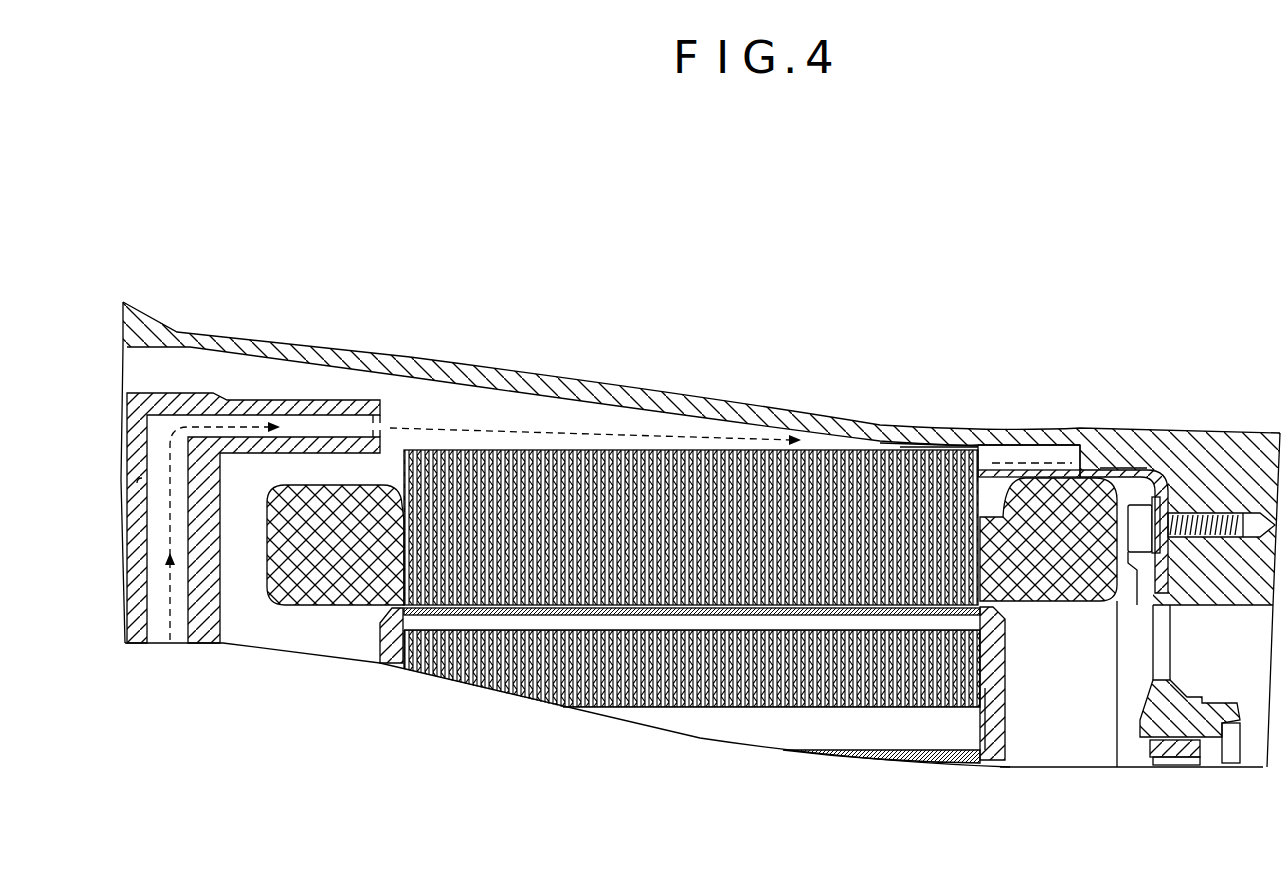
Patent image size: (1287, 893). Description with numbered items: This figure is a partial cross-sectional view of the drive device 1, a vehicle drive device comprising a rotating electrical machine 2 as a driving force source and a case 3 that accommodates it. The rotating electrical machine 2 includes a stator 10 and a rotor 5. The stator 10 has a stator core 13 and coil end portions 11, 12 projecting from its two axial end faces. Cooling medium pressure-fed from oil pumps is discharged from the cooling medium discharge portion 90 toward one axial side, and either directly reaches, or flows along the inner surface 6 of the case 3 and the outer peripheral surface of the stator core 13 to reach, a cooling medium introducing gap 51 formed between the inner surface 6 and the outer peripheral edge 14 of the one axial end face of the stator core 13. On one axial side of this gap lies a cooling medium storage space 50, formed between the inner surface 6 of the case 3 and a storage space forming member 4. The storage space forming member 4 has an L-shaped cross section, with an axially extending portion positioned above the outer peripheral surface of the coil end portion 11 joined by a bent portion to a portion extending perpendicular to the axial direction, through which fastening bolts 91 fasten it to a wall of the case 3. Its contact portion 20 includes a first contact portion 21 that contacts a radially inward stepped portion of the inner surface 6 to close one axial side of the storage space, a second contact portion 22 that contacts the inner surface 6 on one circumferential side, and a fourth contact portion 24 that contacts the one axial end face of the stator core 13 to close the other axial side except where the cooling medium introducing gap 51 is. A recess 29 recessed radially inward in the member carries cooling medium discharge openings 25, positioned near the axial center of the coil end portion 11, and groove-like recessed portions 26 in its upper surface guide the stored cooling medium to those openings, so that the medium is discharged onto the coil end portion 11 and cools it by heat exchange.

The drive device 1 is at (1092, 276).
The rotating electrical machine 2 is at (253, 653).
The case 3 is at (363, 345).
The storage space forming member 4 is at (1178, 487).
The rotor 5 is at (368, 657).
The inner surface 6 is at (541, 413).
The stator 10 is at (337, 618).
The coil end portion 11 is at (1058, 605).
The coil end portion 12 is at (267, 550).
The stator core 13 is at (470, 450).
The outer peripheral edge 14 is at (985, 445).
The contact portion 20 is at (1059, 397).
The first contact portion 21 is at (1108, 470).
The second contact portion 22 is at (1023, 461).
The fourth contact portion 24 is at (948, 445).
The cooling medium discharge openings 25 is at (1063, 463).
The recessed portions 26 is at (1043, 472).
The recess 29 is at (1088, 470).
The cooling medium storage space 50 is at (1005, 452).
The cooling medium introducing gap 51 is at (890, 443).
The cooling medium discharge portion 90 is at (310, 393).
The fastening bolts 91 is at (1136, 567).